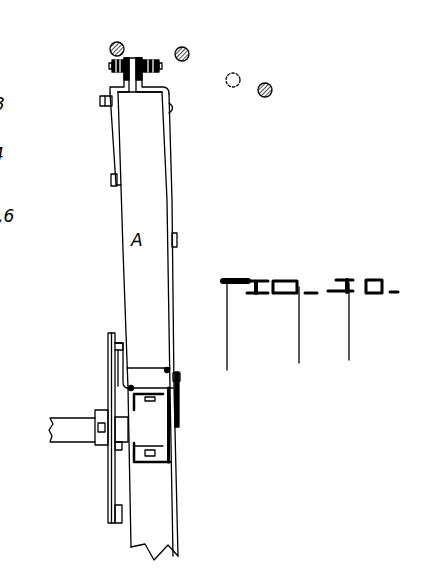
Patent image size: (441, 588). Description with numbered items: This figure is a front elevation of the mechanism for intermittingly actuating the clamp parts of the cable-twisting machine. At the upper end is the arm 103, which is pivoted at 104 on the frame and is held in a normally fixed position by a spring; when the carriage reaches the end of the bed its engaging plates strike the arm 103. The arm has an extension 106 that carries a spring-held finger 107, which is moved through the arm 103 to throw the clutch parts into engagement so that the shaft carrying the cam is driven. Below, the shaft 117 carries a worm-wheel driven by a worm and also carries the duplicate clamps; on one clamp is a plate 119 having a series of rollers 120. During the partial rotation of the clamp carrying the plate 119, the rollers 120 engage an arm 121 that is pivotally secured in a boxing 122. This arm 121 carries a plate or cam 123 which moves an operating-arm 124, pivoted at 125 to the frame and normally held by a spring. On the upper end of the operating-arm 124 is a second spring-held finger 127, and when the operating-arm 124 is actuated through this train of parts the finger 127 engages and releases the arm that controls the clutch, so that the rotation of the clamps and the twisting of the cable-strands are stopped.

The arm 103 is at (115, 130).
The pivot 104 is at (112, 187).
The extension of arm 106 is at (124, 78).
The spring-held finger 107 is at (113, 63).
The shaft 117 is at (62, 427).
The plate 119 is at (110, 388).
The rollers 120 is at (108, 333).
The arm 121 is at (125, 348).
The boxing 122 is at (146, 378).
The plate or cam 123 is at (174, 387).
The operating-arm 124 is at (170, 288).
The pivot 125 is at (170, 218).
The spring-held finger 127 is at (156, 57).